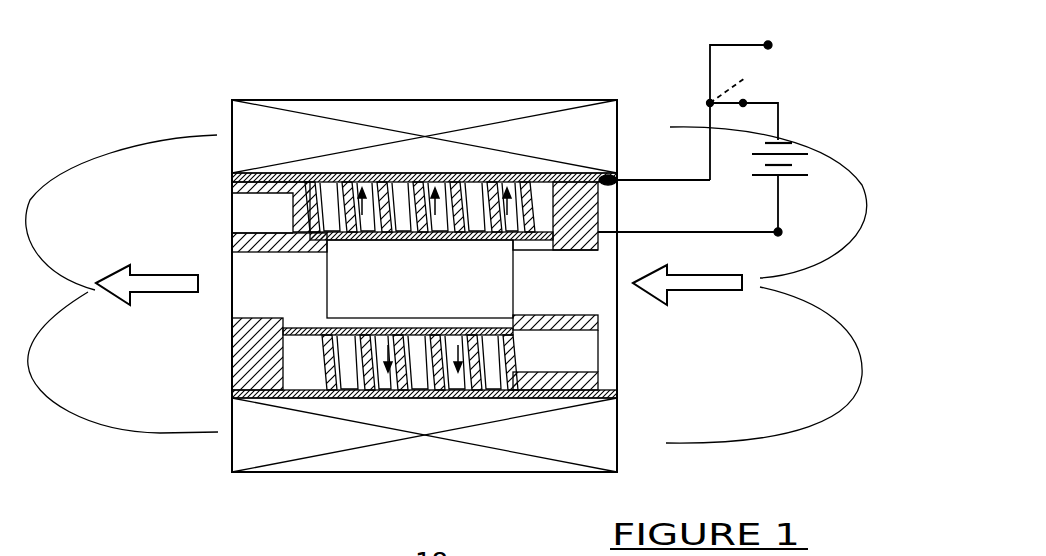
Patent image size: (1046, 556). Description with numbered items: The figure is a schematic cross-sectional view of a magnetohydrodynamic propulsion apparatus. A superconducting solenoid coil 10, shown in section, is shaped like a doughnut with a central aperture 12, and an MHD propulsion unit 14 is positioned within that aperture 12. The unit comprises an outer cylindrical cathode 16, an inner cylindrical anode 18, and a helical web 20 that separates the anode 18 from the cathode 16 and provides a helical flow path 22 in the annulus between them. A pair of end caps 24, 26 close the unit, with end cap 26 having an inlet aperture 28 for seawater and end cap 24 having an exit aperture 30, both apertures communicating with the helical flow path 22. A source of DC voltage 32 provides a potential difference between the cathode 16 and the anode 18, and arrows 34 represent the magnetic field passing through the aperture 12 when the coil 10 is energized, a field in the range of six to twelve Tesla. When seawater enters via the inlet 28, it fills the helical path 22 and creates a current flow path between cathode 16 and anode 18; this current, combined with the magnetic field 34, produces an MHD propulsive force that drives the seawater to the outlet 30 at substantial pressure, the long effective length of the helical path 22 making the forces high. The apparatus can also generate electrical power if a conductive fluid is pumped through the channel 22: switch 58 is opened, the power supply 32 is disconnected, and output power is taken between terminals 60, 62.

The superconducting solenoid coil 10 is at (570, 135).
The central aperture 12 is at (205, 302).
The MHD propulsion unit 14 is at (422, 160).
The outer cylindrical cathode 16 is at (347, 393).
The inner cylindrical anode 18 is at (445, 238).
The helical web 20 is at (453, 360).
The helical flow path 22 is at (352, 362).
The end cap 24 is at (232, 352).
The end cap 26 is at (600, 208).
The inlet aperture 28 is at (620, 353).
The exit aperture 30 is at (250, 210).
The source of DC voltage 32 is at (790, 134).
The magnetic field arrows 34 is at (117, 282).
The switch 58 is at (720, 100).
The terminal 60 is at (738, 45).
The terminal 62 is at (778, 236).